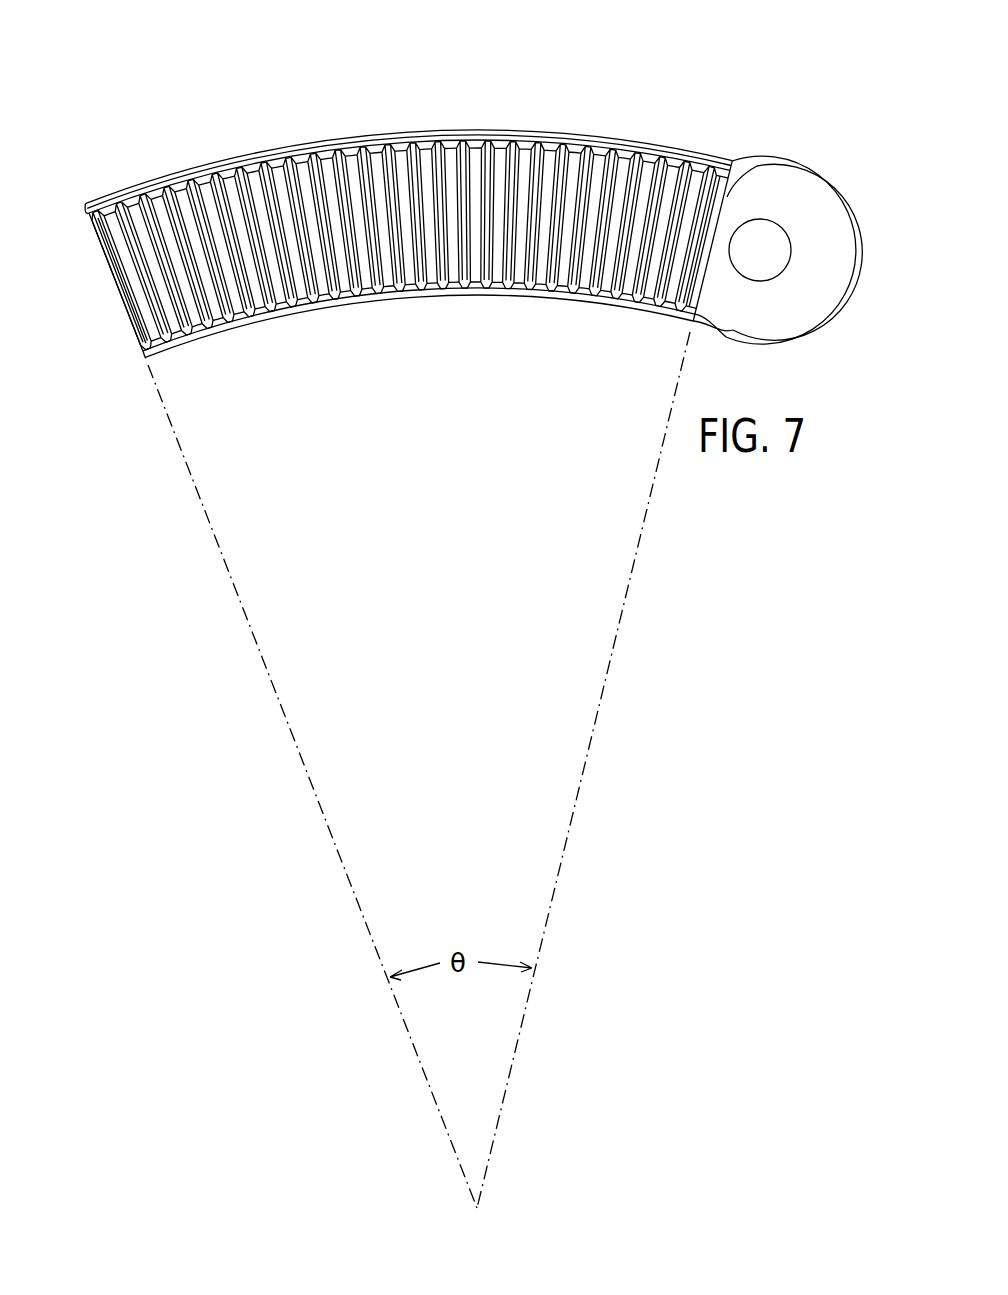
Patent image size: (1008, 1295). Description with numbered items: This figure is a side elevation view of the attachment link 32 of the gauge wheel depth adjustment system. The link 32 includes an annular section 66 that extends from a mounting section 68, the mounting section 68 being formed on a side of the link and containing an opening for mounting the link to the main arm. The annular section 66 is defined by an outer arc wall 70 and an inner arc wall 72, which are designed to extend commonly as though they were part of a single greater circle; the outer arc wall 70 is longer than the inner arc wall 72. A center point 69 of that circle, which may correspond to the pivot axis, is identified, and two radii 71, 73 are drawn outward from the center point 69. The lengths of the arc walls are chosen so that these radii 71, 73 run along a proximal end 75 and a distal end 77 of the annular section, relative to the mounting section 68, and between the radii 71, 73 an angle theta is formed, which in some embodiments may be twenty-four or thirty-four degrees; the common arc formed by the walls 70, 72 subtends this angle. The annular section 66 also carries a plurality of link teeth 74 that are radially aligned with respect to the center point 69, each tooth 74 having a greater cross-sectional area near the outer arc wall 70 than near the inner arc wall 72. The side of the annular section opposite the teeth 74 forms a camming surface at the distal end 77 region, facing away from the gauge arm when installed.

The attachment link 32 is at (556, 88).
The outer arc wall 70 is at (590, 133).
The link teeth 74 is at (180, 196).
The proximal end 75 is at (757, 168).
The mounting section 68 is at (854, 236).
The distal end 77 is at (107, 280).
The inner arc wall 72 is at (452, 294).
The annular section 66 is at (297, 352).
The radius 73 is at (322, 817).
The radius 71 is at (568, 841).
The center point 69 is at (483, 1216).